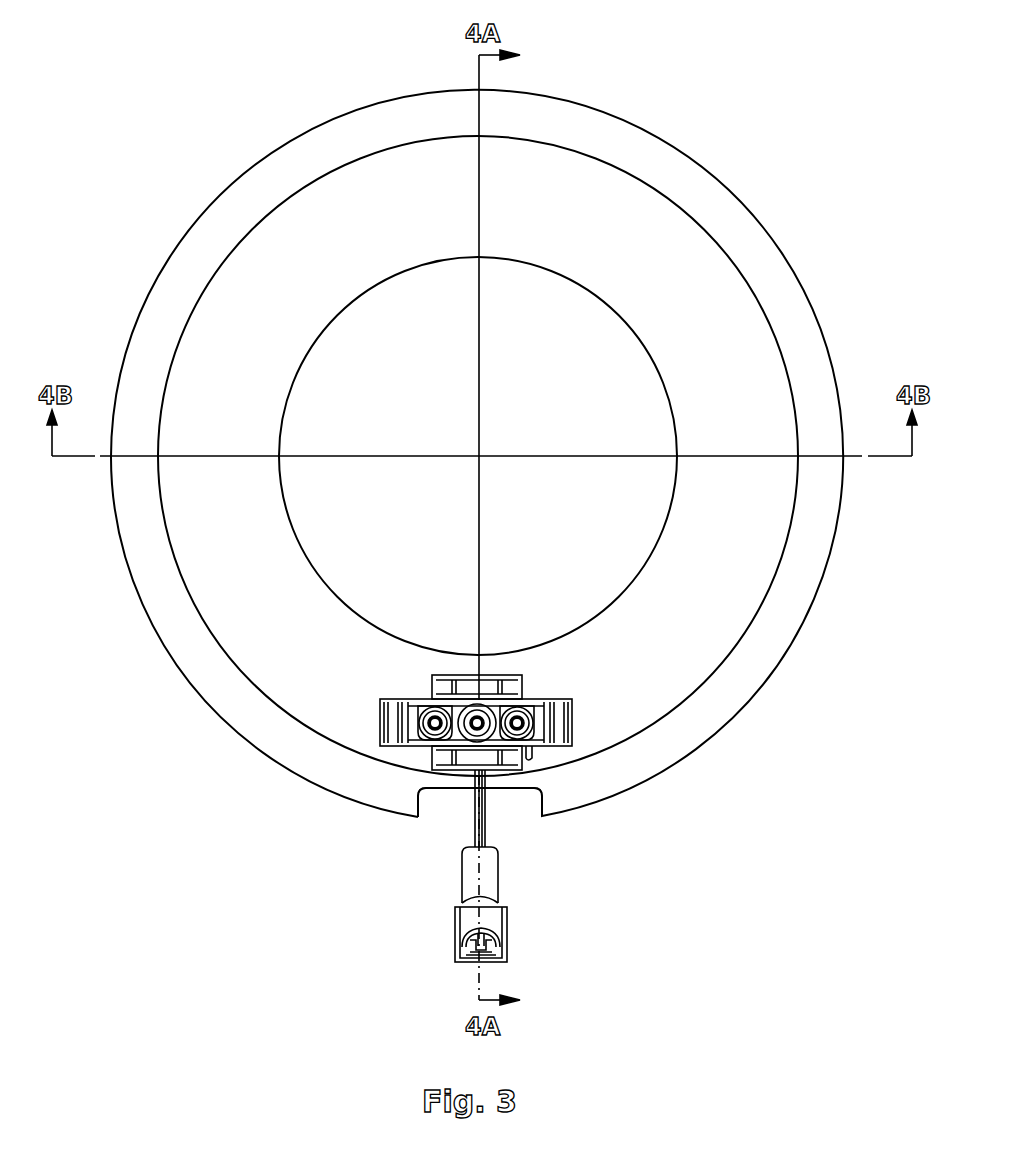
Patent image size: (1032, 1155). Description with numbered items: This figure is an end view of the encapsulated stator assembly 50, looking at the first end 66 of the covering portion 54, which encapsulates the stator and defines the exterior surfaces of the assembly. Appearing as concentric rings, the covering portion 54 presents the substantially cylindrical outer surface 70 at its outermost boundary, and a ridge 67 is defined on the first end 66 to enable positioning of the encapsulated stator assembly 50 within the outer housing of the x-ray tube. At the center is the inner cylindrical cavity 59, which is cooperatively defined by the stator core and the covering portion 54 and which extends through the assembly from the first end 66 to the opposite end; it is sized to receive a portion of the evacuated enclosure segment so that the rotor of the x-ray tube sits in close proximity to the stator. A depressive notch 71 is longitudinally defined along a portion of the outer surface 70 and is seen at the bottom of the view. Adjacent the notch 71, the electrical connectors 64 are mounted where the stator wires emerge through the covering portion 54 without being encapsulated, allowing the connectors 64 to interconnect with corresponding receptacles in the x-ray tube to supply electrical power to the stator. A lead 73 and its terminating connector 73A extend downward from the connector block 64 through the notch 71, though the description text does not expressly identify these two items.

The encapsulated stator assembly 50 is at (738, 116).
The covering portion 54 is at (163, 317).
The inner cylindrical cavity 59 is at (356, 347).
The electrical connectors 64 is at (378, 722).
The first end 66 is at (683, 645).
The ridge 67 is at (148, 563).
The outer surface 70 is at (816, 302).
The depressive notch 71 is at (445, 790).
The lead wire 73 is at (488, 815).
The connector 73A is at (500, 882).